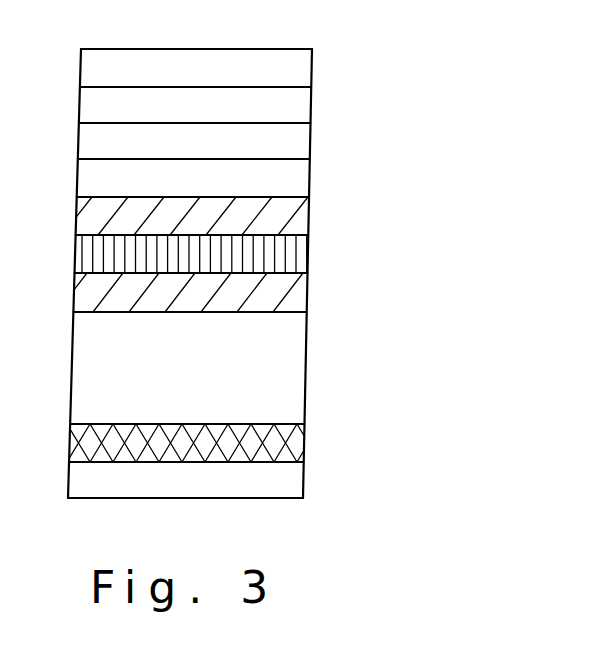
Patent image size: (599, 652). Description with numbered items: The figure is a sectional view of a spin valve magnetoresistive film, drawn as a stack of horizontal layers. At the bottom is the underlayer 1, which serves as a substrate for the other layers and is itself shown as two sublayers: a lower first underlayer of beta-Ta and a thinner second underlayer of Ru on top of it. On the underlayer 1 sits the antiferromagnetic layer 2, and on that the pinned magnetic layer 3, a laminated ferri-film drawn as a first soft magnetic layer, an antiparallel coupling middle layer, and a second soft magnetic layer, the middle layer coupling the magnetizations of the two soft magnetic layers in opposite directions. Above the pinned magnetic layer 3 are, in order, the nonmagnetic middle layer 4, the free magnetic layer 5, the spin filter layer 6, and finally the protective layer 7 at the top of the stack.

The underlayer 1 is at (261, 466).
The antiferromagnetic layer 2 is at (285, 365).
The pinned magnetic layer 3 is at (270, 258).
The nonmagnetic middle layer 4 is at (293, 185).
The free magnetic layer 5 is at (297, 140).
The spin filter layer 6 is at (290, 105).
The protective layer 7 is at (297, 70).